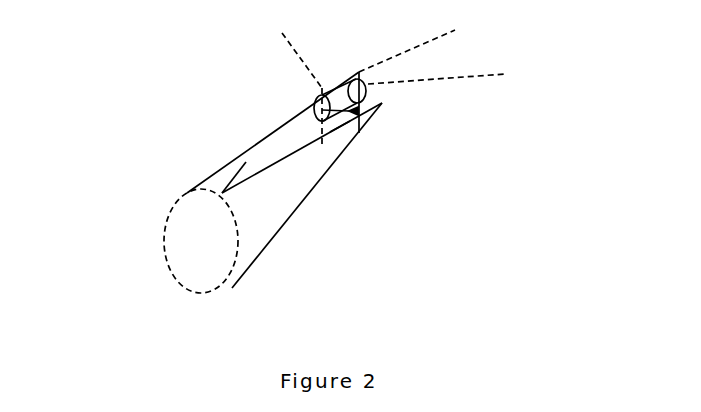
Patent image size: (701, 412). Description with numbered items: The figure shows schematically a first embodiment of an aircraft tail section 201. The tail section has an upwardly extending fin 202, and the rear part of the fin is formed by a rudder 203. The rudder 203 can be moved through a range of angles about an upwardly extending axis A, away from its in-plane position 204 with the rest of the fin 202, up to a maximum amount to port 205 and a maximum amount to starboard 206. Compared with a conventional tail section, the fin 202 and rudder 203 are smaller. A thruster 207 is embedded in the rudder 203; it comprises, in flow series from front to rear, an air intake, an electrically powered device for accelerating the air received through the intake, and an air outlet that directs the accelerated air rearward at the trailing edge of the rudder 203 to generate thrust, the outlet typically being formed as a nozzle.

The aircraft tail section 201 is at (160, 183).
The fin 202 is at (288, 123).
The rudder 203 is at (338, 123).
The in-plane position 204 is at (457, 30).
The maximum amount to port 205 is at (507, 75).
The maximum amount to starboard 206 is at (288, 43).
The thruster 207 is at (357, 112).
The upwardly extending axis A is at (322, 108).